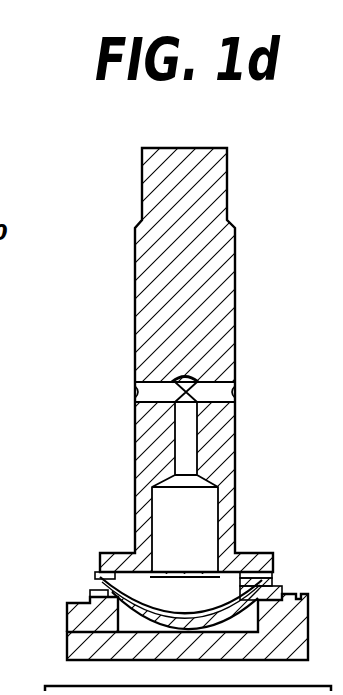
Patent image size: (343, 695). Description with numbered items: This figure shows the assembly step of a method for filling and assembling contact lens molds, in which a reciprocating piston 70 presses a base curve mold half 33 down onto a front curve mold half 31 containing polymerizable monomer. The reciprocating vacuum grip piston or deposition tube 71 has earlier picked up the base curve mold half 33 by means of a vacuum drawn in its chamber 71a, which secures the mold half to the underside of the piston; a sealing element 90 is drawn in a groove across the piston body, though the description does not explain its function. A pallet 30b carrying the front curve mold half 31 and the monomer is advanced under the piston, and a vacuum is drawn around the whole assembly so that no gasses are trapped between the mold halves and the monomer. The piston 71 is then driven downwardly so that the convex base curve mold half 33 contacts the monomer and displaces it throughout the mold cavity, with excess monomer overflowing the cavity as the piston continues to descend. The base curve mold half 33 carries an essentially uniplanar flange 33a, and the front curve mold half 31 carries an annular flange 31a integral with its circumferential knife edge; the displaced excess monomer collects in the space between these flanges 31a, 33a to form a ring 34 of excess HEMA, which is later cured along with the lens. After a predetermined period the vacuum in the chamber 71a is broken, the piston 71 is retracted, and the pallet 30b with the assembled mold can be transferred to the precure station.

The reciprocating piston 70 is at (103, 348).
The reciprocating vacuum grip piston 71 is at (235, 330).
The O-ring seal 90 is at (235, 398).
The chamber 71a is at (180, 528).
The ring of excess HEMA 34 is at (104, 577).
The pallet 30b is at (75, 618).
The front curve mold half 31 is at (67, 632).
The base curve mold half 33 is at (180, 594).
The flange 33a is at (272, 576).
The annular flange 31a is at (288, 595).